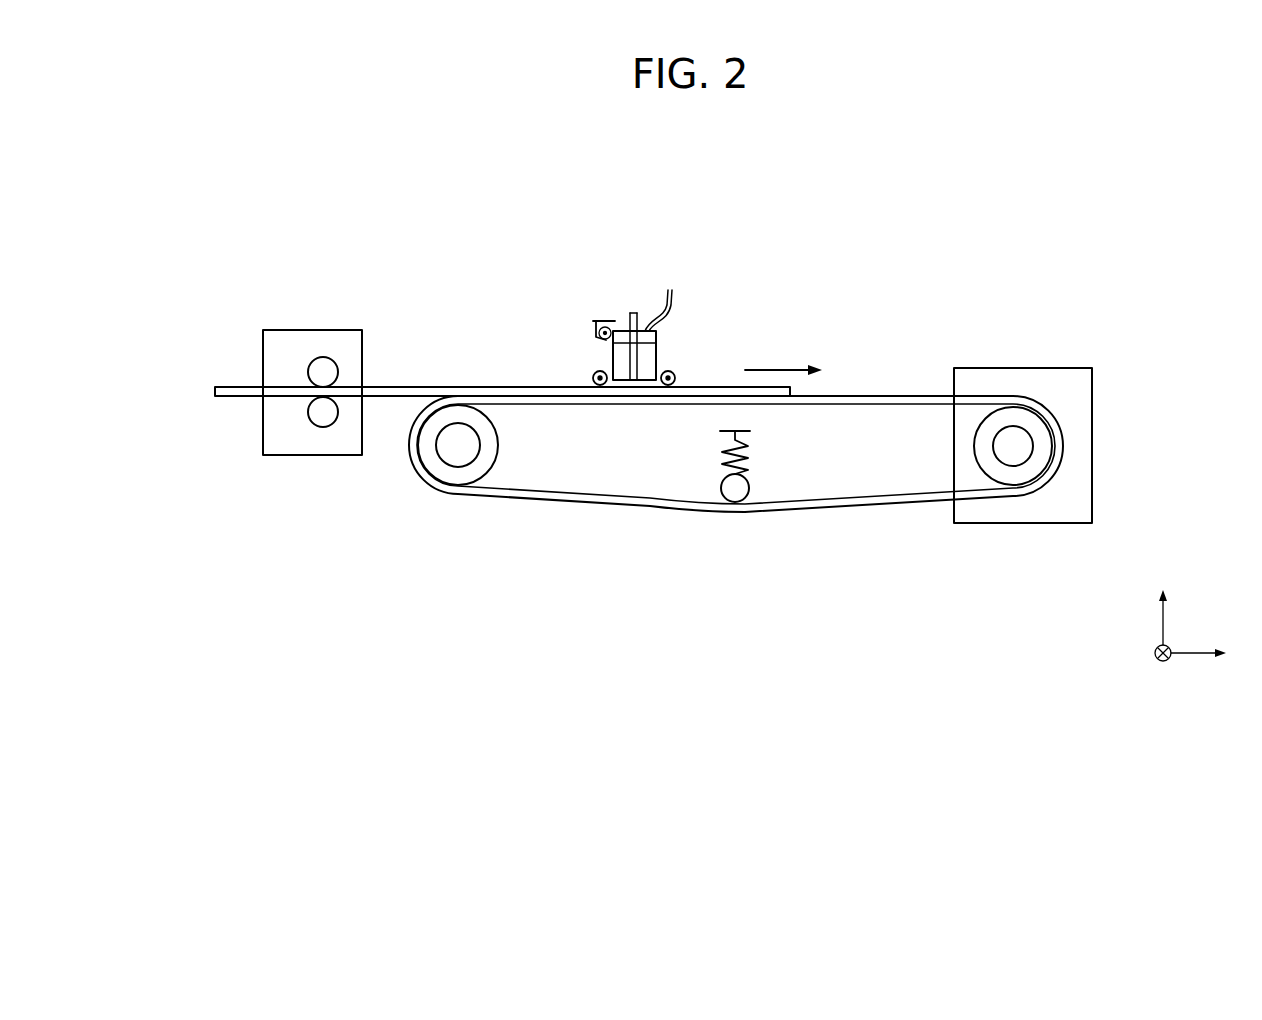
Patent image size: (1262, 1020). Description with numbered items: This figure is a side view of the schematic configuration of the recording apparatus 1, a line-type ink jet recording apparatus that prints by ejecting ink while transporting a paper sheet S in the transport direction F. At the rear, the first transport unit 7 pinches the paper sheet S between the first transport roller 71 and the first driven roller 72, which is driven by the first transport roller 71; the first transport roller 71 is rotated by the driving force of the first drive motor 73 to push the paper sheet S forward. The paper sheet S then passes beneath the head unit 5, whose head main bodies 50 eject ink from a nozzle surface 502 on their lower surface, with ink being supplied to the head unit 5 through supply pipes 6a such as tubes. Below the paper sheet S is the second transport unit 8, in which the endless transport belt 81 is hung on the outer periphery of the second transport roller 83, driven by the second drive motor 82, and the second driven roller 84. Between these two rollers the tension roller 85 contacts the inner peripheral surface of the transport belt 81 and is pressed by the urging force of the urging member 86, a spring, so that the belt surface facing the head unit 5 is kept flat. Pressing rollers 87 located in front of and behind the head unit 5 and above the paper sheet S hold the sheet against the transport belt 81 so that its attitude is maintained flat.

The recording apparatus 1 is at (1074, 208).
The head unit 5 is at (620, 308).
The head main body 50 is at (575, 350).
The nozzle surface 502 is at (622, 388).
The supply pipe 6a is at (676, 292).
The first transport unit 7 is at (243, 285).
The first transport roller 71 is at (308, 418).
The first driven roller 72 is at (308, 372).
The first drive motor 73 is at (318, 330).
The second transport unit 8 is at (874, 348).
The transport belt 81 is at (913, 395).
The second drive motor 82 is at (1022, 367).
The second transport roller 83 is at (1014, 470).
The second driven roller 84 is at (455, 472).
The tension roller 85 is at (735, 498).
The urging member 86 is at (719, 467).
The pressing roller 87 is at (591, 377).
The paper sheet S is at (213, 392).
The transport direction F is at (783, 355).